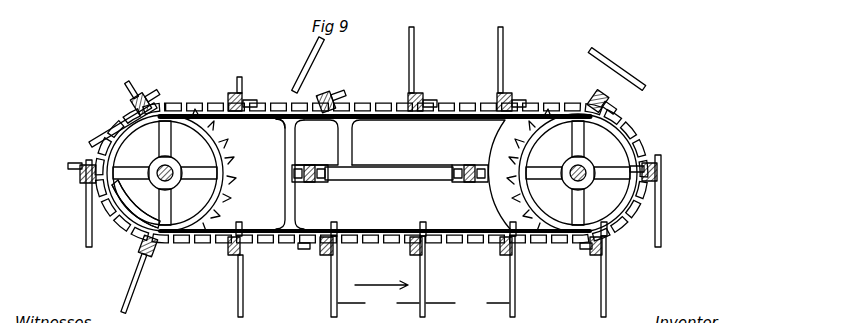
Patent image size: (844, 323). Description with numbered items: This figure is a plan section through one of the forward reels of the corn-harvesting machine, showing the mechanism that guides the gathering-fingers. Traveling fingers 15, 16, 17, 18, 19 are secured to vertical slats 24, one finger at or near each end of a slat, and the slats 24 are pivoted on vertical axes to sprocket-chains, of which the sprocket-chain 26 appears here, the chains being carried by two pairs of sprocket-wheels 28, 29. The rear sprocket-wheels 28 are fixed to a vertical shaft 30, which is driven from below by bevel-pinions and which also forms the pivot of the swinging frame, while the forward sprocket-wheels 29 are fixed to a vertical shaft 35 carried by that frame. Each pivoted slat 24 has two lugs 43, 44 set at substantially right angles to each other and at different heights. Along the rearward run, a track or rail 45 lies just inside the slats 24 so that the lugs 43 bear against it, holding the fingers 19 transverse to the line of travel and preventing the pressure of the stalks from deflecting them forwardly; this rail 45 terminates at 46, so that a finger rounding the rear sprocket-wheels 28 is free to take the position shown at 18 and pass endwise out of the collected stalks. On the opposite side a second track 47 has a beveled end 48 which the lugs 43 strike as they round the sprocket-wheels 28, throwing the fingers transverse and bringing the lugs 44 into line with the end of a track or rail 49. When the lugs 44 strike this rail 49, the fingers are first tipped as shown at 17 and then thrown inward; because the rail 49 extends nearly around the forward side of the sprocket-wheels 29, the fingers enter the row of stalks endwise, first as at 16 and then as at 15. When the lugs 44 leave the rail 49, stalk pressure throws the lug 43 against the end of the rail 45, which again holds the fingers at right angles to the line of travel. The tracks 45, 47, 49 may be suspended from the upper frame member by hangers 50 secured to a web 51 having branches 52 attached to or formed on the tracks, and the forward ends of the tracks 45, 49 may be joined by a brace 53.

The gathering-finger 15 is at (86, 240).
The gathering-finger 16 is at (92, 139).
The gathering-finger 17 is at (312, 70).
The gathering-finger 18 is at (661, 215).
The gathering-finger 19 is at (423, 298).
The vertical slat 24 is at (230, 95).
The sprocket-chain 26 is at (536, 100).
The sprocket-wheel 28 is at (572, 170).
The sprocket-wheel 29 is at (130, 103).
The vertical shaft 30 is at (582, 168).
The vertical shaft 35 is at (168, 166).
The lug 43 is at (140, 81).
The lug 44 is at (163, 102).
The track or rail 45 is at (316, 232).
The termination of track 46 is at (622, 233).
The track 47 is at (459, 119).
The beveled end 48 is at (623, 117).
The track or rail 49 is at (258, 121).
The hanger 50 is at (312, 183).
The web 51 is at (350, 145).
The branch 52 is at (283, 202).
The brace 53 is at (113, 188).